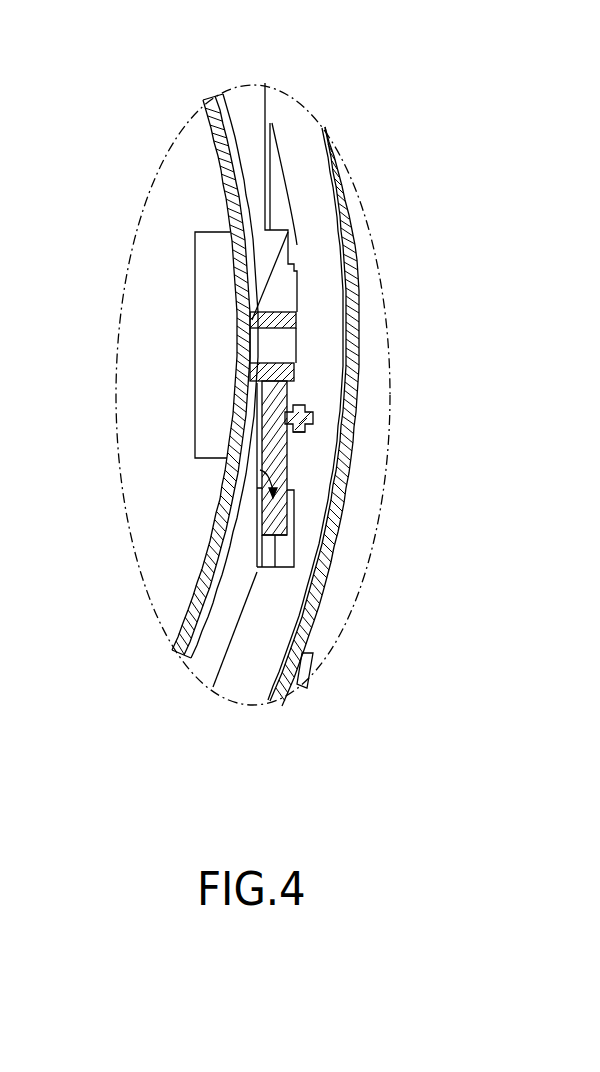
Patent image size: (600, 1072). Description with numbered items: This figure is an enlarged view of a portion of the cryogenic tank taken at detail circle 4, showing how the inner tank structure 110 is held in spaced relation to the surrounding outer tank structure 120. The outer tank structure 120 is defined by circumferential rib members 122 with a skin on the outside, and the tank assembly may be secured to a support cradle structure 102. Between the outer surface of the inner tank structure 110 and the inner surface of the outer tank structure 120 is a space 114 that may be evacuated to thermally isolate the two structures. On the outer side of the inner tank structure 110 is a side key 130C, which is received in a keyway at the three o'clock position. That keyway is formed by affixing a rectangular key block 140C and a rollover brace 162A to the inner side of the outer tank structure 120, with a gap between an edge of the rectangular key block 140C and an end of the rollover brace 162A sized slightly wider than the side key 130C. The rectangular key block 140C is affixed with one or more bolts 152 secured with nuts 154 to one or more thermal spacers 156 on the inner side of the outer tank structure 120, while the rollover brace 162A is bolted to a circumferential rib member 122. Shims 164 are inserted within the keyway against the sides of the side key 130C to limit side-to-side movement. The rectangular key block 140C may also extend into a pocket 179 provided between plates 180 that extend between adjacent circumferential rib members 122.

The detail circle 4 is at (130, 530).
The support cradle structure 102 is at (323, 607).
The inner tank structure 110 is at (204, 100).
The space 114 is at (229, 648).
The outer tank structure 120 is at (352, 177).
The circumferential rib member 122 is at (271, 659).
The side key 130C is at (300, 341).
The rectangular key block 140C is at (258, 470).
The bolt 152 is at (282, 420).
The nut 154 is at (295, 430).
The thermal spacer 156 is at (293, 430).
The rollover brace 162A is at (277, 280).
The shim 164 is at (267, 308).
The pocket 179 is at (260, 470).
The plate 180 is at (257, 540).